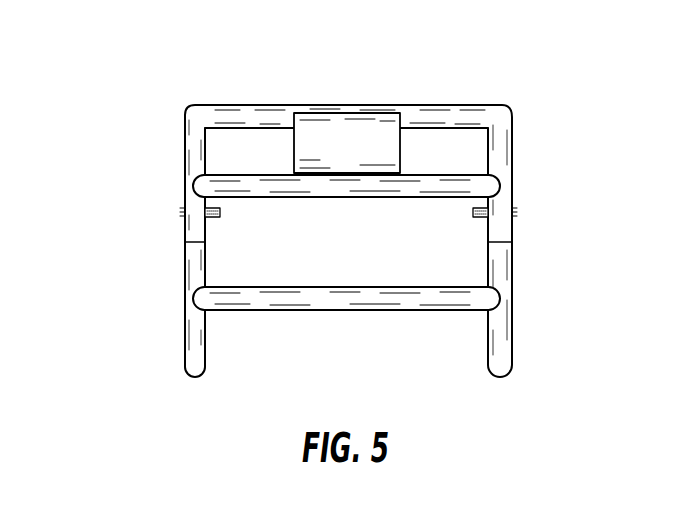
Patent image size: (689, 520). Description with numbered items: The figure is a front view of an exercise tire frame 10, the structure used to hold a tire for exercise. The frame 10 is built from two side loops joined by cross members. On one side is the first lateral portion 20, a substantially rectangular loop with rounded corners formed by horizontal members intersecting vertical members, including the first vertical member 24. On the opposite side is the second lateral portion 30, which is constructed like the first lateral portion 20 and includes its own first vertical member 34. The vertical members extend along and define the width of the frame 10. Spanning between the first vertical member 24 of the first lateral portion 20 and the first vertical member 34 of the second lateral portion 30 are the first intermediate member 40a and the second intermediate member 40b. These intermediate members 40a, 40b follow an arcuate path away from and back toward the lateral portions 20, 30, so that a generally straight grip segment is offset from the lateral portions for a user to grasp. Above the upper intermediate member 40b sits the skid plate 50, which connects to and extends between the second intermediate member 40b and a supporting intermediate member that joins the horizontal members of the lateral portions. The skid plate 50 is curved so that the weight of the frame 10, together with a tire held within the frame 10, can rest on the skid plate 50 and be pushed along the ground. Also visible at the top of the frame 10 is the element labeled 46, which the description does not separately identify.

The exercise tire frame 10 is at (145, 55).
The first lateral portion 20 is at (521, 264).
The first vertical member 24 is at (512, 233).
The second lateral portion 30 is at (166, 285).
The first vertical member 34 is at (185, 233).
The first intermediate member 40a is at (297, 310).
The second intermediate member 40b is at (293, 197).
The top bar 46 is at (276, 105).
The skid plate 50 is at (349, 140).